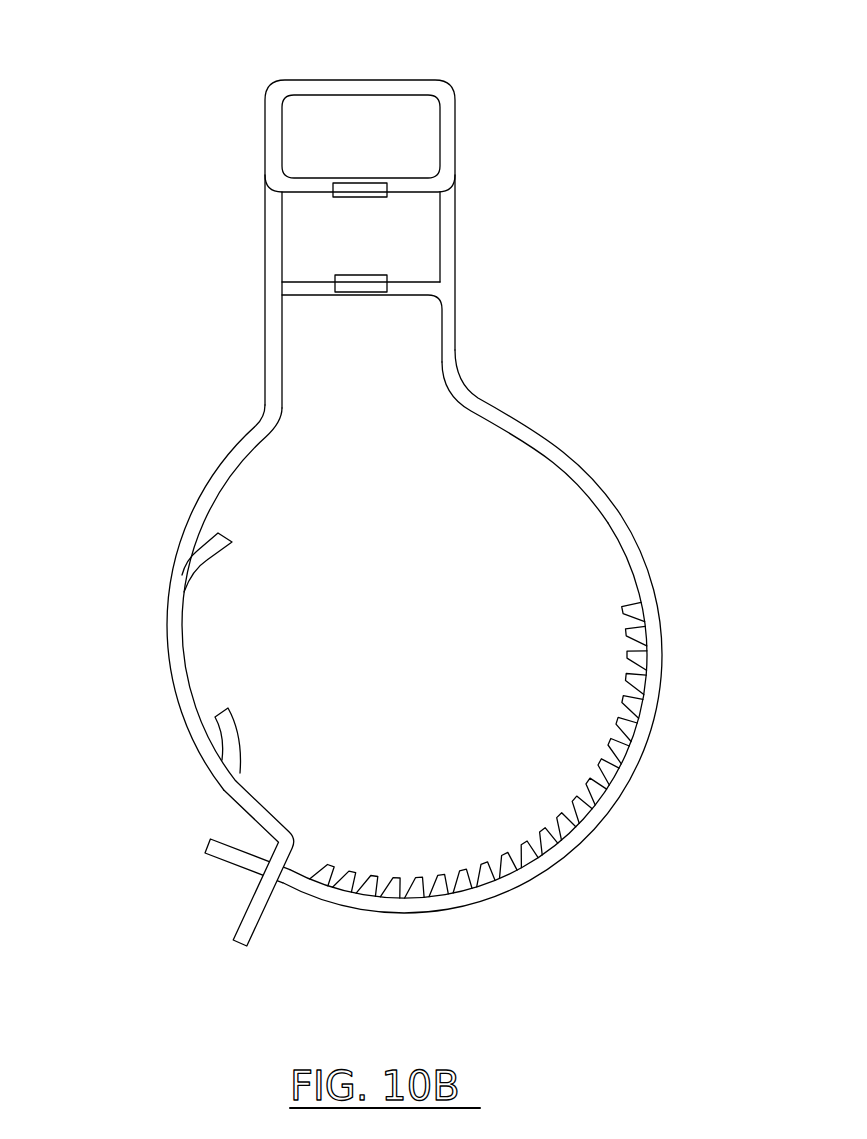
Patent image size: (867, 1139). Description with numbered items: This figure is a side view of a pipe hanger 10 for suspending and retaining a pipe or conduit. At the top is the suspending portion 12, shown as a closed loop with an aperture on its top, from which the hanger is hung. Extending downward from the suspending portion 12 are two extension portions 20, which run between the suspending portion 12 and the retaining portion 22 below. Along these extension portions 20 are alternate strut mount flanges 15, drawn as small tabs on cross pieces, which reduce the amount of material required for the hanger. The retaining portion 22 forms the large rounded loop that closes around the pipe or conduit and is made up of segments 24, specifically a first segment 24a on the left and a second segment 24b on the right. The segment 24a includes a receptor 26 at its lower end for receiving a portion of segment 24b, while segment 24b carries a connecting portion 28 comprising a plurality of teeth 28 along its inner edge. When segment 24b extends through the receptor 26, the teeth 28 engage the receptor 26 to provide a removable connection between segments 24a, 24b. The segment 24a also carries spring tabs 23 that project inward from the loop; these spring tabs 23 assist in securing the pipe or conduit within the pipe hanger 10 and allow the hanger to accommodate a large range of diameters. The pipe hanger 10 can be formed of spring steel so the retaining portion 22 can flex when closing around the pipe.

The pipe hanger 10 is at (419, 489).
The suspending portion 12 is at (362, 82).
The alternate strut mount flanges 15 is at (311, 196).
The extension portions 20 is at (265, 233).
The retaining portion 22 is at (498, 408).
The spring tabs 23 is at (213, 563).
The segments 24 is at (419, 684).
The segment 24a is at (190, 521).
The segment 24b is at (620, 502).
The receptor 26 is at (248, 927).
The connecting portion / teeth 28 is at (628, 603).